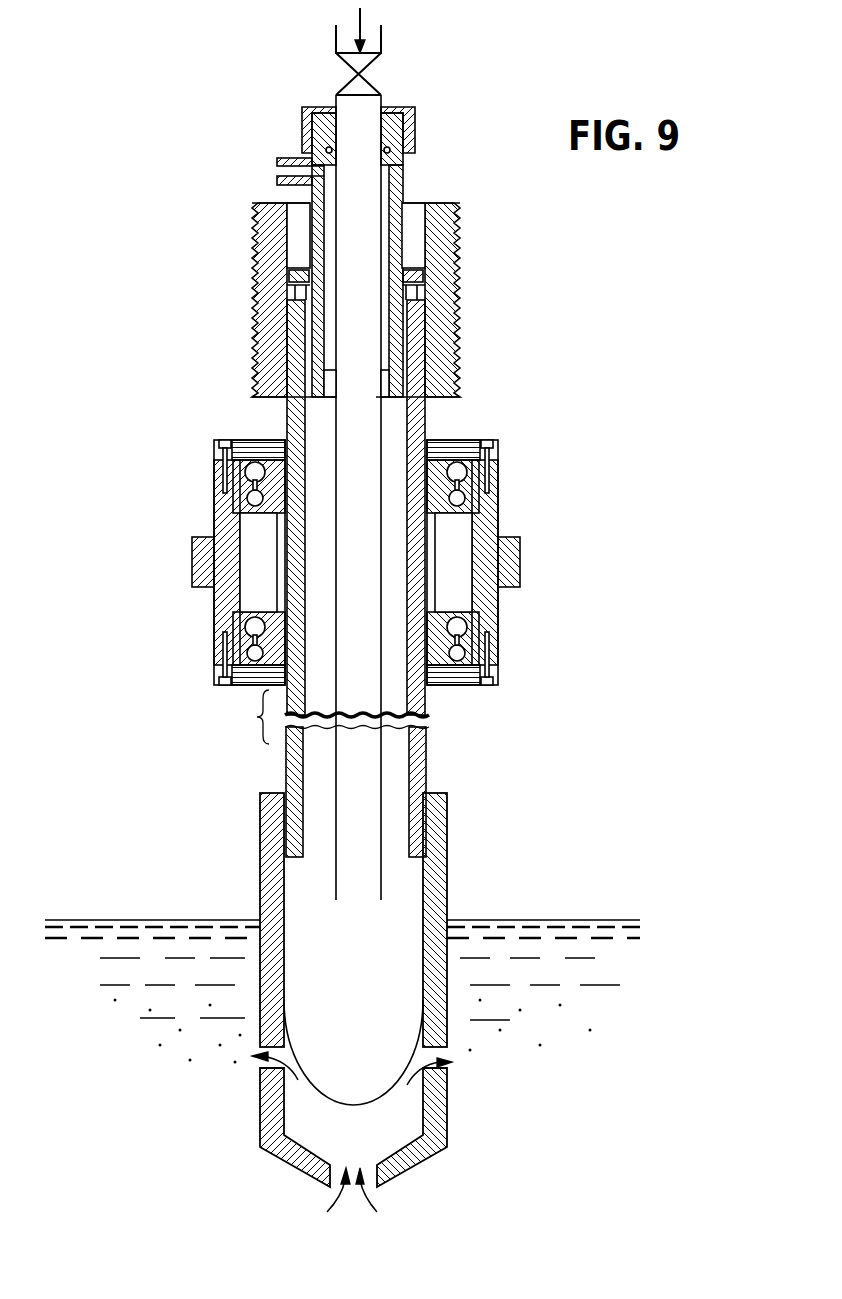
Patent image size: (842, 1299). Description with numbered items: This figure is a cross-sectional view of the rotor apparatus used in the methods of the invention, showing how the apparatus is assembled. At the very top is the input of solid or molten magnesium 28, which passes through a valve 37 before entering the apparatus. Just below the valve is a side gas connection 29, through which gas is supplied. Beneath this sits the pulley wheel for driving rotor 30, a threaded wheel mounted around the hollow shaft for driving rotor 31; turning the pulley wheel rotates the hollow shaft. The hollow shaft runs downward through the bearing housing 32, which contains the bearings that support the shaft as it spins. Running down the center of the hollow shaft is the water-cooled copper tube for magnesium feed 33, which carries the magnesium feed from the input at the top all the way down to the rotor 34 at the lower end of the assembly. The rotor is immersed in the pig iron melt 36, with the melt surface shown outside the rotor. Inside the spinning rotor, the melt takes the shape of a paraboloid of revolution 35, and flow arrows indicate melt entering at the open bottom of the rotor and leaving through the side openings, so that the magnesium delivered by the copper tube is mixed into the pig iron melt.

The input of solid or molten magnesium 28 is at (374, 26).
The gas connection 29 is at (268, 170).
The pulley wheel for driving rotor 30 is at (462, 293).
The hollow shaft for driving rotor 31 is at (427, 422).
The bearing housing 32 is at (498, 487).
The water-cooled copper tube for magnesium feed 33 is at (381, 771).
The rotor 34 is at (447, 880).
The paraboloid of revolution 35 is at (396, 1087).
The pig iron melt 36 is at (150, 1049).
The valve 37 is at (362, 75).